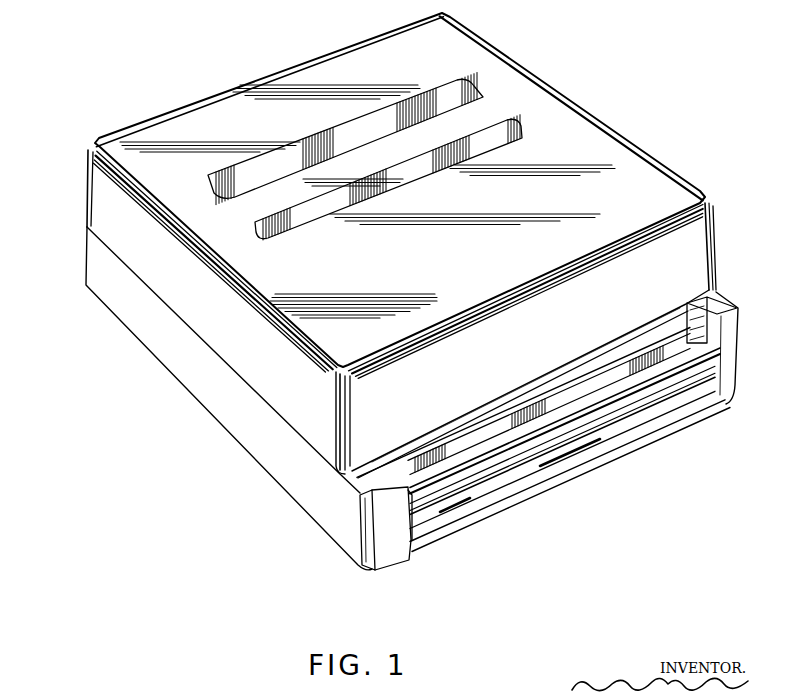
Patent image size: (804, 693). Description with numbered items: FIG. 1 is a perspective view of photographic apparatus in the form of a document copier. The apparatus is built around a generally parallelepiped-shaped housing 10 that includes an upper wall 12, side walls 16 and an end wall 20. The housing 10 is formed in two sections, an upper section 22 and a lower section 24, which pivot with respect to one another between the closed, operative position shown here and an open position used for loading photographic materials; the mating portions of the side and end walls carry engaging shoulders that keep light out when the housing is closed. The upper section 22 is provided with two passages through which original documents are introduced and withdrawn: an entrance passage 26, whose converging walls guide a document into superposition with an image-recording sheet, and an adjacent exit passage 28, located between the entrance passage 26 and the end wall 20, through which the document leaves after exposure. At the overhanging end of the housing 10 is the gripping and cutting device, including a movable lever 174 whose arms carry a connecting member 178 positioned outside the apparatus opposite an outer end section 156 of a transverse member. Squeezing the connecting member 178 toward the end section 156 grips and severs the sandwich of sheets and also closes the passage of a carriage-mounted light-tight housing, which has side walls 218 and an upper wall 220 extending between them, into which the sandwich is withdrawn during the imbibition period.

The housing 10 is at (264, 78).
The upper wall 12 is at (452, 259).
The side walls 16 is at (240, 334).
The end wall 20 is at (604, 329).
The upper section 22 is at (84, 195).
The lower section 24 is at (86, 264).
The entrance passage 26 is at (357, 135).
The exit passage 28 is at (407, 177).
The outer end section 156 is at (504, 497).
The movable lever 174 is at (376, 470).
The connecting member 178 is at (560, 443).
The side walls 218 is at (729, 325).
The upper wall 220 is at (482, 413).